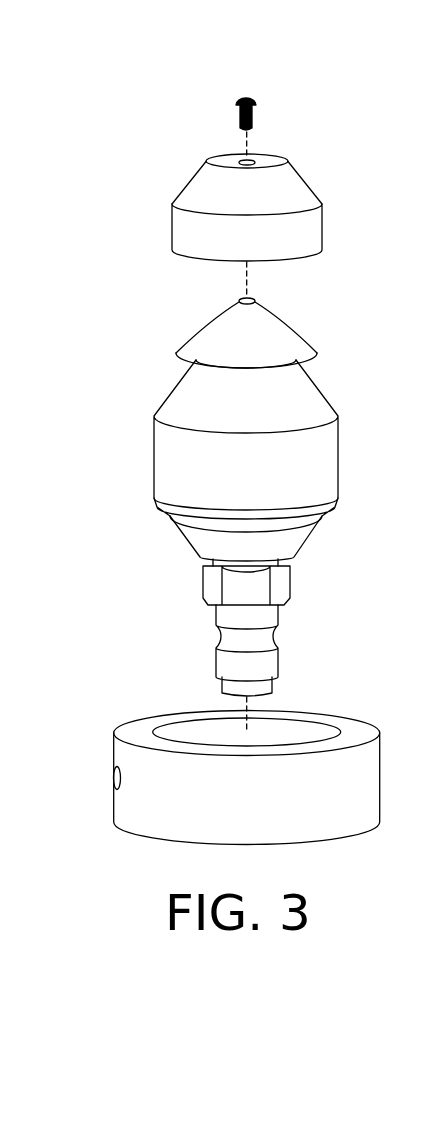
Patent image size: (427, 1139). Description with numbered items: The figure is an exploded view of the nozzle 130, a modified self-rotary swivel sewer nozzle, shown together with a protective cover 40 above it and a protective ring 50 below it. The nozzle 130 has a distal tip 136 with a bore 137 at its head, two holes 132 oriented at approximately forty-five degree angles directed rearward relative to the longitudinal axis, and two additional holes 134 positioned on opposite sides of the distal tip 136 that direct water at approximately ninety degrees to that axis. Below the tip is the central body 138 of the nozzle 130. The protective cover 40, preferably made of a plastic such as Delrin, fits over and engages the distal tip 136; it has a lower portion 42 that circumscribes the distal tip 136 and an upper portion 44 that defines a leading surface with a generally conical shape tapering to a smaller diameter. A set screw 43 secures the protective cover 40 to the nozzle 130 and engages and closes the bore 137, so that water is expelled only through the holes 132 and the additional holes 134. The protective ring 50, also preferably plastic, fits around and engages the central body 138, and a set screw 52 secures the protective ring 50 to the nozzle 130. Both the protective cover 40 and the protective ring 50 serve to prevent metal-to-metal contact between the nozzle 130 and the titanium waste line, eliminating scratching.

The protective cover 40 is at (244, 180).
The lower portion 42 is at (177, 220).
The set screw 43 is at (247, 97).
The upper portion 44 is at (190, 180).
The protective ring 50 is at (206, 737).
The set screw 52 is at (113, 778).
The nozzle 130 is at (227, 490).
The holes 132 is at (283, 362).
The additional holes 134 is at (195, 361).
The distal tip 136 is at (244, 343).
The bore 137 is at (251, 299).
The central body 138 is at (162, 457).